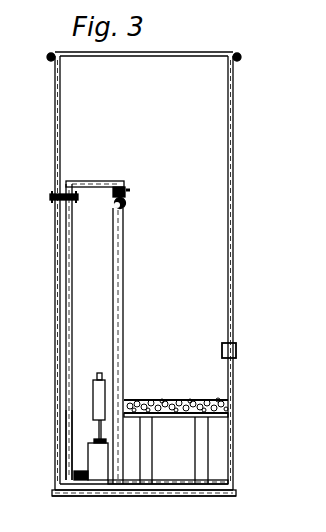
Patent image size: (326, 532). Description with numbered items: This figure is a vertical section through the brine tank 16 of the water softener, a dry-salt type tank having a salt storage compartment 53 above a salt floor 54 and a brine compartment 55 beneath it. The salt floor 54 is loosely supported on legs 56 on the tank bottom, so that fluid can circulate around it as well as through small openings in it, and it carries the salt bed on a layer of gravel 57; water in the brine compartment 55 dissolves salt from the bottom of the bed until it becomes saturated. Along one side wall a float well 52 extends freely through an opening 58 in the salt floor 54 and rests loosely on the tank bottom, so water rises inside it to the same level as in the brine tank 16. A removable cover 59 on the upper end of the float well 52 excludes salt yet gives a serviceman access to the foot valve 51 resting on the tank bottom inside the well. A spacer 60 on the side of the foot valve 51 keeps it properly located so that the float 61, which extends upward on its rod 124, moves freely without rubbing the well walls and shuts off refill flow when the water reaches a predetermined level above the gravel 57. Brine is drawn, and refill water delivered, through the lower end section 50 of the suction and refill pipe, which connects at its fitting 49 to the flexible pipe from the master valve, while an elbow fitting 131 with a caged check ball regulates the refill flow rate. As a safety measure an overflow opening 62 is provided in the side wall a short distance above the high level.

The brine tank 16 is at (158, 274).
The fitting 49 is at (113, 208).
The lower end section of the suction and refill pipe 50 is at (113, 312).
The foot valve 51 is at (88, 457).
The float well 52 is at (65, 293).
The salt storage compartment 53 is at (225, 181).
The salt floor 54 is at (176, 423).
The brine compartment 55 is at (229, 447).
The legs 56 is at (199, 457).
The layer of gravel 57 is at (143, 402).
The opening 58 is at (66, 420).
The removable cover 59 is at (86, 184).
The spacer 60 is at (76, 476).
The float 61 is at (95, 381).
The overflow opening 62 is at (237, 352).
The rod 124 is at (96, 436).
The elbow fitting 131 is at (115, 493).